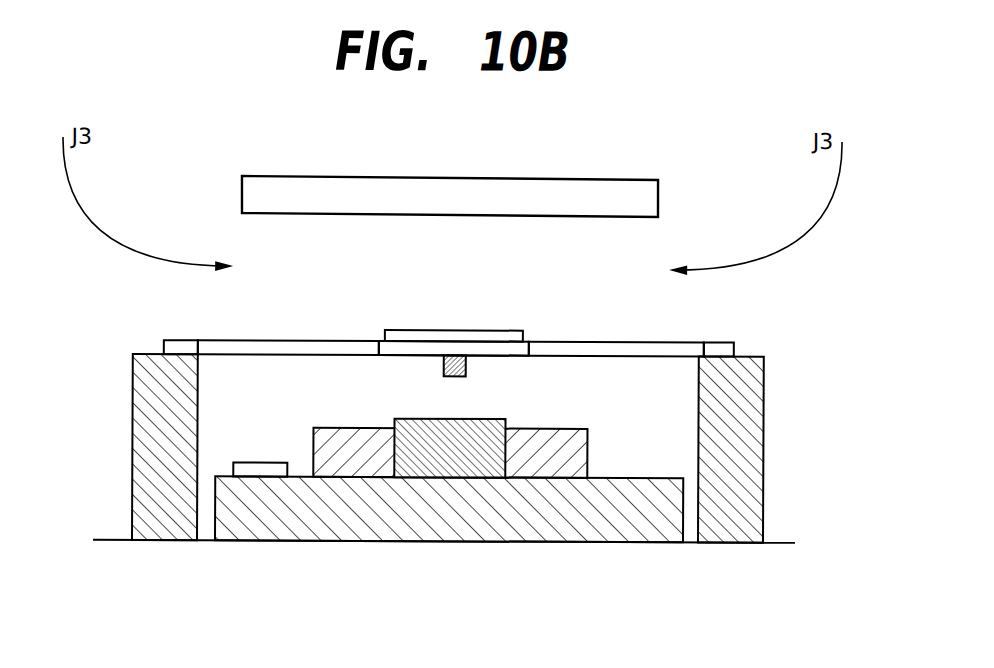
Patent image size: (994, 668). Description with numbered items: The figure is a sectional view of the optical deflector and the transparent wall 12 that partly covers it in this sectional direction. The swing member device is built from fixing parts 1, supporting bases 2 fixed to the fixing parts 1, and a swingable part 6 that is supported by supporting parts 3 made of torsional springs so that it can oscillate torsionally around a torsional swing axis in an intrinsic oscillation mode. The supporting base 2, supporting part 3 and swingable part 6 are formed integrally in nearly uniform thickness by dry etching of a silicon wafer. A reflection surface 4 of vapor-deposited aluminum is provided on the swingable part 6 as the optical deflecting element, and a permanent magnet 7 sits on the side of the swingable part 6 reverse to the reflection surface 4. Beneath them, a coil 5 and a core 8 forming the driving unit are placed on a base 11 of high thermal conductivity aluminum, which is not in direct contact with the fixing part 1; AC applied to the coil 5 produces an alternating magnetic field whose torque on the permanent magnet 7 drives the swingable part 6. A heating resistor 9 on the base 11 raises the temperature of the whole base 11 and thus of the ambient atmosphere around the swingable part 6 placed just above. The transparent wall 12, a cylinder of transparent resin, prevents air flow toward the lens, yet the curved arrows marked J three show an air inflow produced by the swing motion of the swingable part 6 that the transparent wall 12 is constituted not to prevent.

The fixing part 1 is at (140, 427).
The supporting base 2 is at (178, 340).
The supporting part 3 is at (279, 337).
The reflection surface 4 is at (419, 339).
The coil 5 is at (340, 426).
The swingable part 6 is at (391, 354).
The permanent magnet 7 is at (464, 370).
The core 8 is at (478, 416).
The heating resistor 9 is at (258, 462).
The base 11 is at (585, 528).
The transparent wall 12 is at (296, 175).